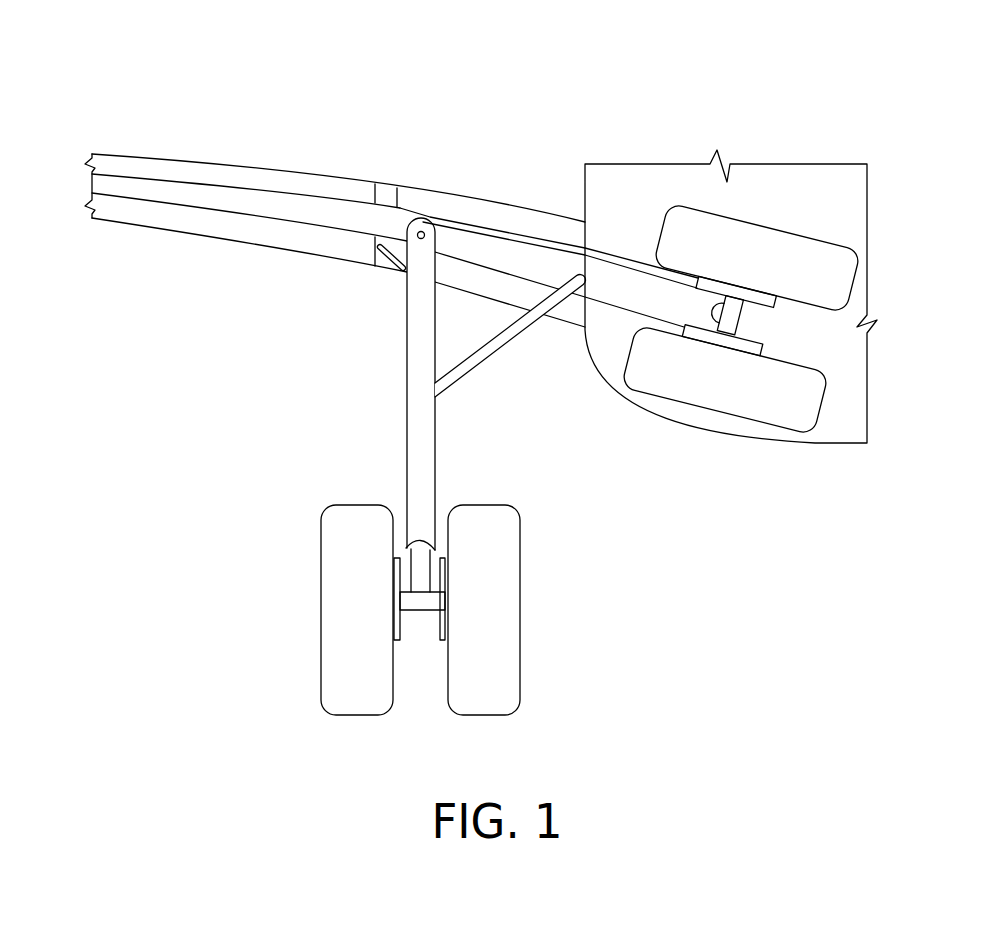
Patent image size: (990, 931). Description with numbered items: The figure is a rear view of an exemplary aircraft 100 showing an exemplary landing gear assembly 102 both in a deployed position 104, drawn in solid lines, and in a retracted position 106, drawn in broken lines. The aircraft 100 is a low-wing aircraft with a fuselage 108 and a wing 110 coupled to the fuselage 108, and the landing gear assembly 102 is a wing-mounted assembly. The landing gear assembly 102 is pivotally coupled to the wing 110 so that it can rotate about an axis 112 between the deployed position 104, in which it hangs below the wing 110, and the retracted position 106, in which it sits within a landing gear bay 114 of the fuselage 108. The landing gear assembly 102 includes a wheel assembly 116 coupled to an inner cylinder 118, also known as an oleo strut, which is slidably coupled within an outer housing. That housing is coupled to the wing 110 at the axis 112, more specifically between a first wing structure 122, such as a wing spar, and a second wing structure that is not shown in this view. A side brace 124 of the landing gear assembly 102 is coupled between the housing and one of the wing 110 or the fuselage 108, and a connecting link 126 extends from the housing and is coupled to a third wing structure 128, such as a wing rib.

The aircraft 100 is at (110, 88).
The landing gear assembly 102 is at (328, 322).
The deployed position 104 is at (578, 670).
The retracted position 106 is at (861, 417).
The fuselage 108 is at (610, 134).
The wing 110 is at (208, 160).
The axis 112 is at (423, 220).
The landing gear bay 114 is at (832, 203).
The wheel assembly 116 is at (271, 699).
The inner cylinder 118 is at (420, 558).
The first wing structure 122 is at (262, 201).
The side brace 124 is at (482, 362).
The connecting link 126 is at (400, 274).
The third wing structure 128 is at (383, 192).